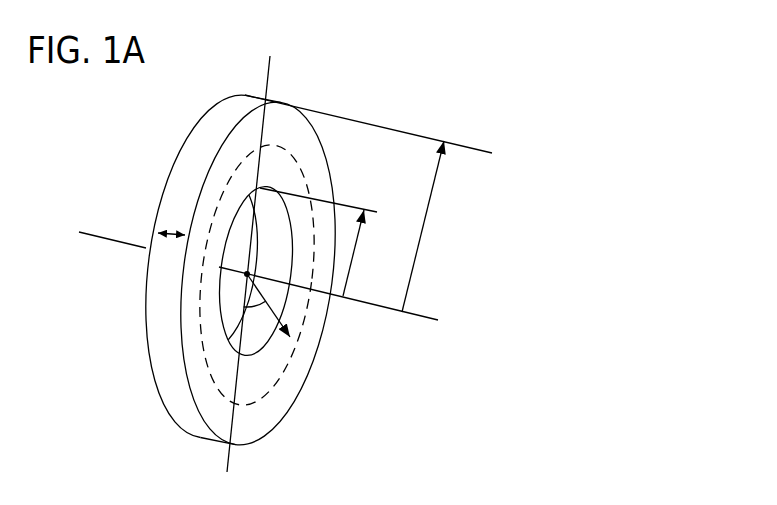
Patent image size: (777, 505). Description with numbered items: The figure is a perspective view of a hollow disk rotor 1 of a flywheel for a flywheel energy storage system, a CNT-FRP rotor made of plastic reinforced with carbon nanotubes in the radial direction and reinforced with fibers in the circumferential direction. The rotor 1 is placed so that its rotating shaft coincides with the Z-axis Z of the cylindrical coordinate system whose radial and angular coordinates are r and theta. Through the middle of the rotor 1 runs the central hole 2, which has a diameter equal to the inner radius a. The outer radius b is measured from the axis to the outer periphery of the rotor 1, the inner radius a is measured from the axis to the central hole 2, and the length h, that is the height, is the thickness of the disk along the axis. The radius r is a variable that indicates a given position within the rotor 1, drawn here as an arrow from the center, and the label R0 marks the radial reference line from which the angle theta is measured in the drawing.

The hollow disk rotor 1 is at (184, 145).
The central hole 2 is at (275, 257).
The central axis / radial reference line R0 is at (241, 280).
The Z-axis Z is at (273, 285).
The outer radius b is at (368, 203).
The inner radius a is at (318, 242).
The length h is at (171, 217).
The radius r is at (272, 305).